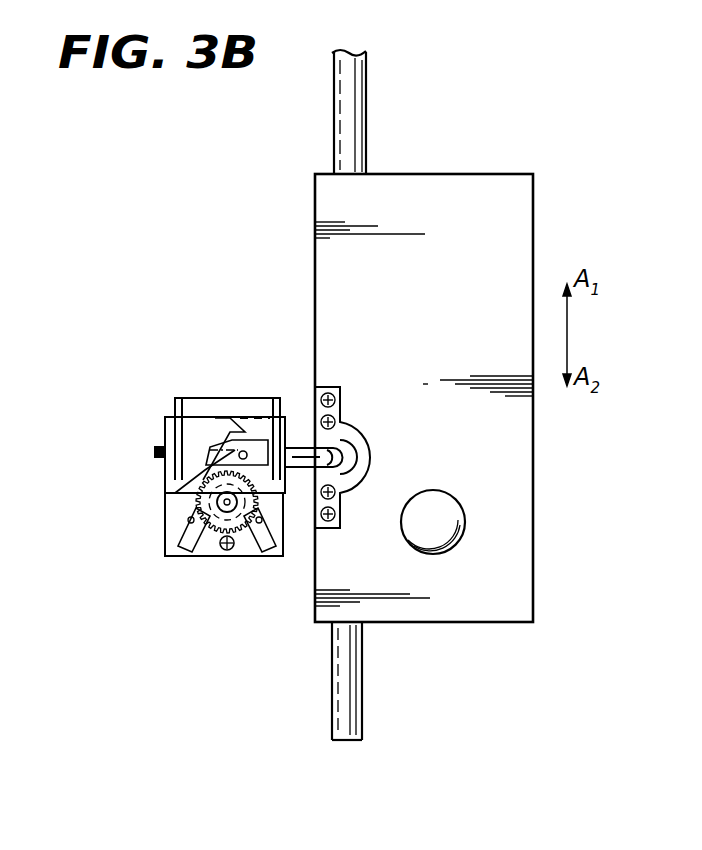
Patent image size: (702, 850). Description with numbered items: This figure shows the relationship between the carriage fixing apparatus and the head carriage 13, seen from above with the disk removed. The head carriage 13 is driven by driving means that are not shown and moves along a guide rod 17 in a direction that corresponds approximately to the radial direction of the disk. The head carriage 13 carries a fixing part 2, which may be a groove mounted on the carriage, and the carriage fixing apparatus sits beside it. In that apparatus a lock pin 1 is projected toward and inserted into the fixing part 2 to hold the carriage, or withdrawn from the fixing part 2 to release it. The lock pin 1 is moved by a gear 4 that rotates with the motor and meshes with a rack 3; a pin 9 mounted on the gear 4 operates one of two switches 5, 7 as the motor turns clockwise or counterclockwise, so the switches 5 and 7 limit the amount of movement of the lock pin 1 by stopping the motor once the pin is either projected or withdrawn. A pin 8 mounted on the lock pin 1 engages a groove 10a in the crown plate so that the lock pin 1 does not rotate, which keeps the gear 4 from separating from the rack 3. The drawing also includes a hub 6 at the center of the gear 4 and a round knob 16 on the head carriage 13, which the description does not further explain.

The lock pin 1 is at (300, 447).
The fixing part 2 is at (338, 528).
The rack 3 is at (258, 497).
The gear 4 is at (285, 556).
The switch 5 is at (262, 540).
The hub 6 is at (222, 502).
The switch 7 is at (183, 537).
The pin 8 is at (243, 451).
The pin 9 is at (213, 530).
The groove 10a is at (235, 435).
The head carriage 13 is at (448, 185).
The knob 16 is at (440, 533).
The guide rod 17 is at (366, 103).